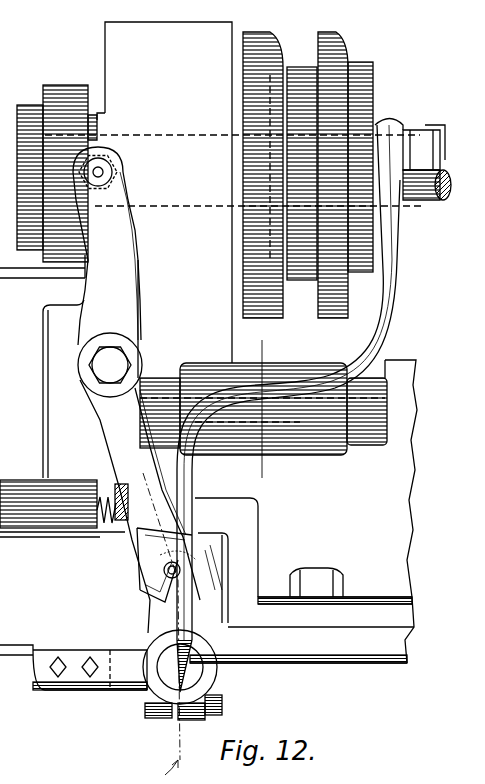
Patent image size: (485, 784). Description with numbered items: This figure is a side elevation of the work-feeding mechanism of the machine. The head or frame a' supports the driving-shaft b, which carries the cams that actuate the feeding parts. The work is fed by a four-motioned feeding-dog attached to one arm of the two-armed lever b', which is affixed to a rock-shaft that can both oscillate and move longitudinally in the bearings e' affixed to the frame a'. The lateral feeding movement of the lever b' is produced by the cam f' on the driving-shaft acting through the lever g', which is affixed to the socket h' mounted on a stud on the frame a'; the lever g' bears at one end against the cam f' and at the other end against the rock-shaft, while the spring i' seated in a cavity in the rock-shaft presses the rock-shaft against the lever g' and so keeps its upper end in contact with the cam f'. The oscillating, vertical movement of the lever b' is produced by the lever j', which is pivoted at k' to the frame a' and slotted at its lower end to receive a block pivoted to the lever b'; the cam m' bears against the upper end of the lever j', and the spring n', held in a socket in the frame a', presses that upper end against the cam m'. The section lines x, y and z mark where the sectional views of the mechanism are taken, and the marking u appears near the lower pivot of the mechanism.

The head or frame a' is at (235, 200).
The cam m' is at (44, 181).
The cam f' is at (327, 175).
The driving-shaft b is at (427, 185).
The lever g' is at (301, 406).
The socket h' is at (263, 392).
The section line z z is at (260, 410).
The pivot k' is at (136, 390).
The lever j' is at (114, 421).
The section line y y is at (156, 606).
The spring n' is at (64, 489).
The spring i' is at (146, 565).
The pin u is at (181, 596).
The section line x x is at (171, 698).
The bearings e' is at (125, 664).
The two-armed lever b' is at (73, 655).